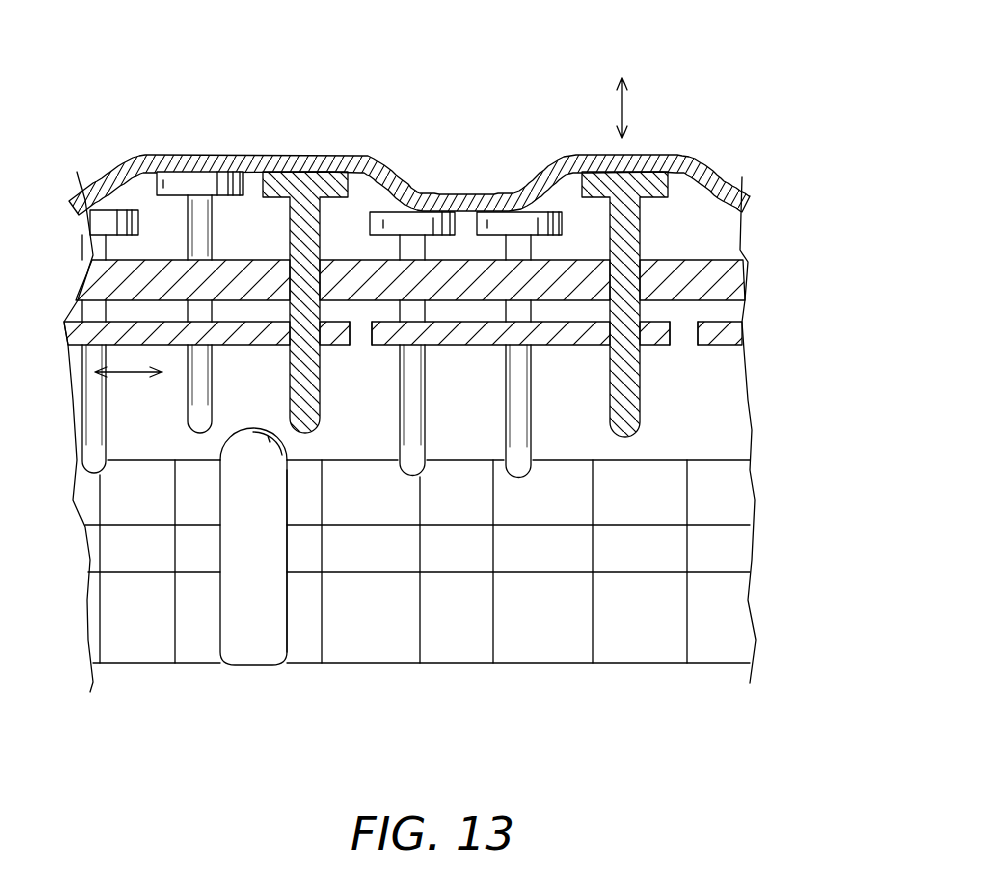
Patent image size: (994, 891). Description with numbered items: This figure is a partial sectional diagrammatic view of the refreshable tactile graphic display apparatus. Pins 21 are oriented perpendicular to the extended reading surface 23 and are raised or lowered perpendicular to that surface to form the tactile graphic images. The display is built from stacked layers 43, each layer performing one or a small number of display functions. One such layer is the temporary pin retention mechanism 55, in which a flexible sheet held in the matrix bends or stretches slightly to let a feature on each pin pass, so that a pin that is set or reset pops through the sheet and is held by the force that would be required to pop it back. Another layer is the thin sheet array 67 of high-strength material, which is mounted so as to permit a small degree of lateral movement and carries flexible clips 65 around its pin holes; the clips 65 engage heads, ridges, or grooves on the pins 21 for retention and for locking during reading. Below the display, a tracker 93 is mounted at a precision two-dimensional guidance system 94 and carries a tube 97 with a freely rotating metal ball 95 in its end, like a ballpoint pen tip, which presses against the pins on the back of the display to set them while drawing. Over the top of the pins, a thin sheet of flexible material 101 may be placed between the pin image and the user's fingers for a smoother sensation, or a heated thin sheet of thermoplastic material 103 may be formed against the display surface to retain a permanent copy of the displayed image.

The thin sheet of flexible material 101 is at (409, 117).
The thin sheet of thermoplastic material 103 is at (185, 155).
The reading surface 23 is at (165, 258).
The pins 21 is at (310, 177).
The layers 43 is at (453, 320).
The temporary pin retention mechanism 55 is at (728, 278).
The thin sheet array 67 is at (718, 345).
The flexible clips 65 is at (345, 347).
The freely rotating metal ball 95 is at (250, 438).
The tube 97 is at (253, 645).
The tracker 93 is at (290, 633).
The 2-dimensional guidance system 94 is at (637, 638).